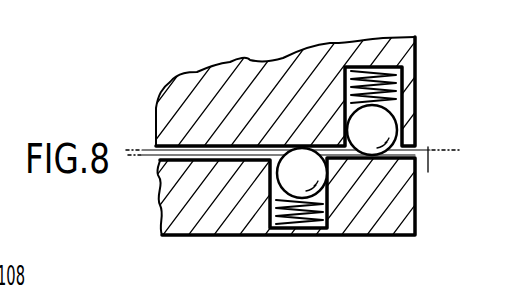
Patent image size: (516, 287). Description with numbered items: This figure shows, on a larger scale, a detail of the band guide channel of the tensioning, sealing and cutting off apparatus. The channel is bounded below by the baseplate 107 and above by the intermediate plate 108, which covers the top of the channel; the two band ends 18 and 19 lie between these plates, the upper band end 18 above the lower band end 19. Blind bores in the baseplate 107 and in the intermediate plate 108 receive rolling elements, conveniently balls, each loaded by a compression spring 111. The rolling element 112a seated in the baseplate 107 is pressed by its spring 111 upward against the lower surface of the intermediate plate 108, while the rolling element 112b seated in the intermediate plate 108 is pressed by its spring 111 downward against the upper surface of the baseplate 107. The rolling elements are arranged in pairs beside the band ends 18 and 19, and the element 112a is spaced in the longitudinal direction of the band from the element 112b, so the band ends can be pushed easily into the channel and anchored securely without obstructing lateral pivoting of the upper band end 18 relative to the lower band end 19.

The baseplate 107 is at (226, 186).
The intermediate plate 108 is at (290, 80).
The compression spring 111 is at (388, 91).
The rolling element 112a is at (263, 214).
The rolling element 112b is at (381, 122).
The upper band end 18 is at (428, 152).
The lower band end 19 is at (438, 157).